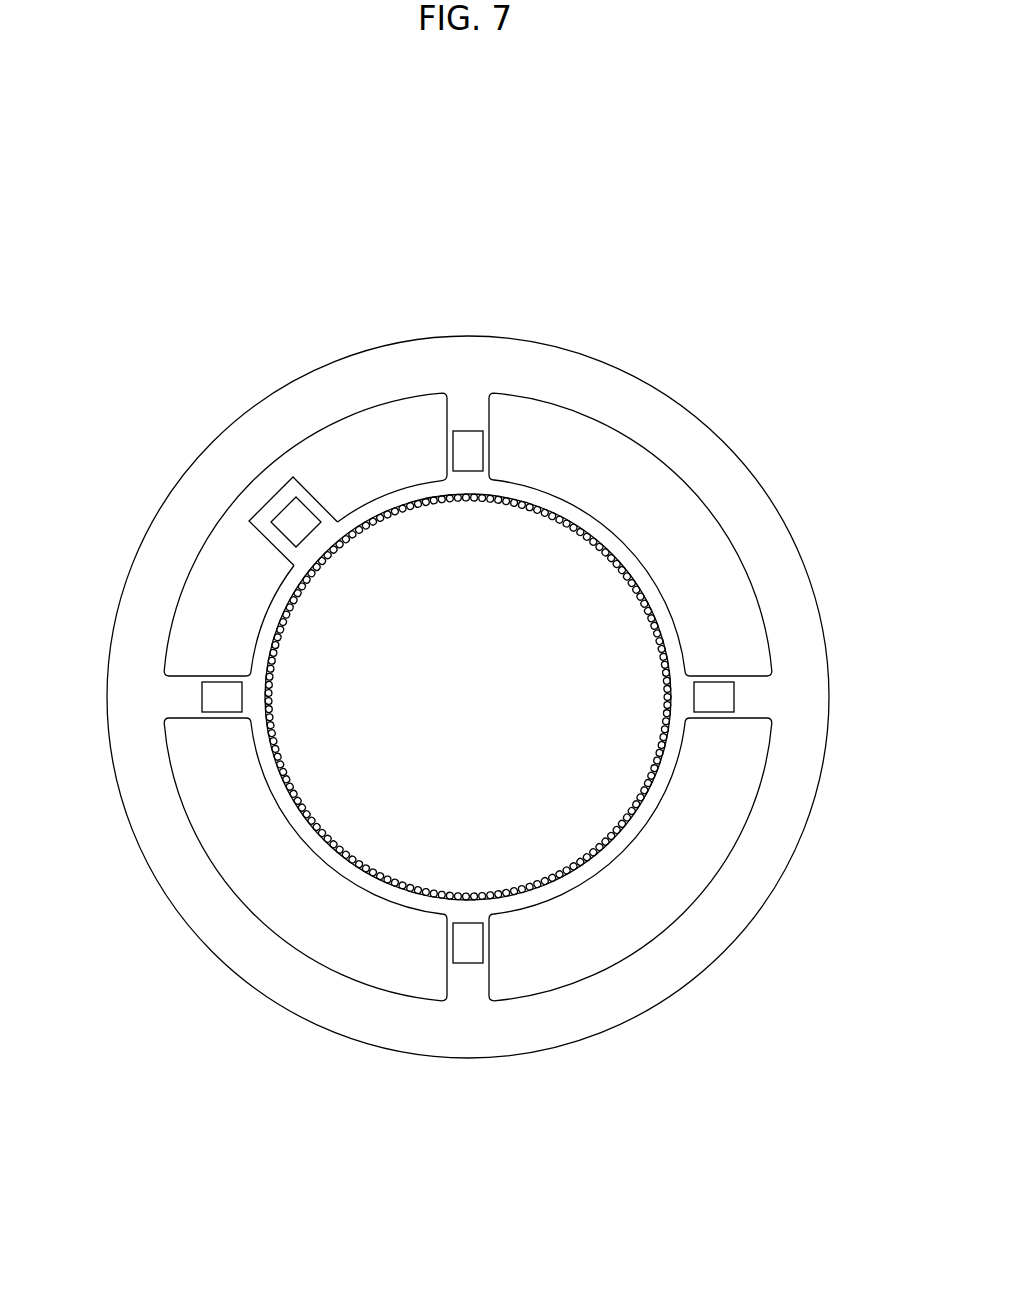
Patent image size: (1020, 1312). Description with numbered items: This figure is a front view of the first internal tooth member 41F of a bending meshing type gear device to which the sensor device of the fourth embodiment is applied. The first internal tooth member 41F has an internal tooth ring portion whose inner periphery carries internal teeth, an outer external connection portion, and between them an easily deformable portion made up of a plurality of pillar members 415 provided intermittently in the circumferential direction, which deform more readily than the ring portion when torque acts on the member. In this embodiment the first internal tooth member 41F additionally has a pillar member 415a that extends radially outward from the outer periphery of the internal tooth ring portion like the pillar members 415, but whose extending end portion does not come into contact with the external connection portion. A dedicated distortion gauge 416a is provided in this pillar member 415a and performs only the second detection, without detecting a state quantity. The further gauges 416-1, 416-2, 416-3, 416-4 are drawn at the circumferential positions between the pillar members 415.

The first internal tooth member 41F is at (169, 299).
The pillar member 415 is at (488, 413).
The pillar member 415a is at (322, 503).
The distortion gauge 416a is at (285, 510).
The detection unit 416-1 is at (735, 698).
The detection unit 416-2 is at (469, 962).
The detection unit 416-3 is at (205, 688).
The detection unit 416-4 is at (470, 442).